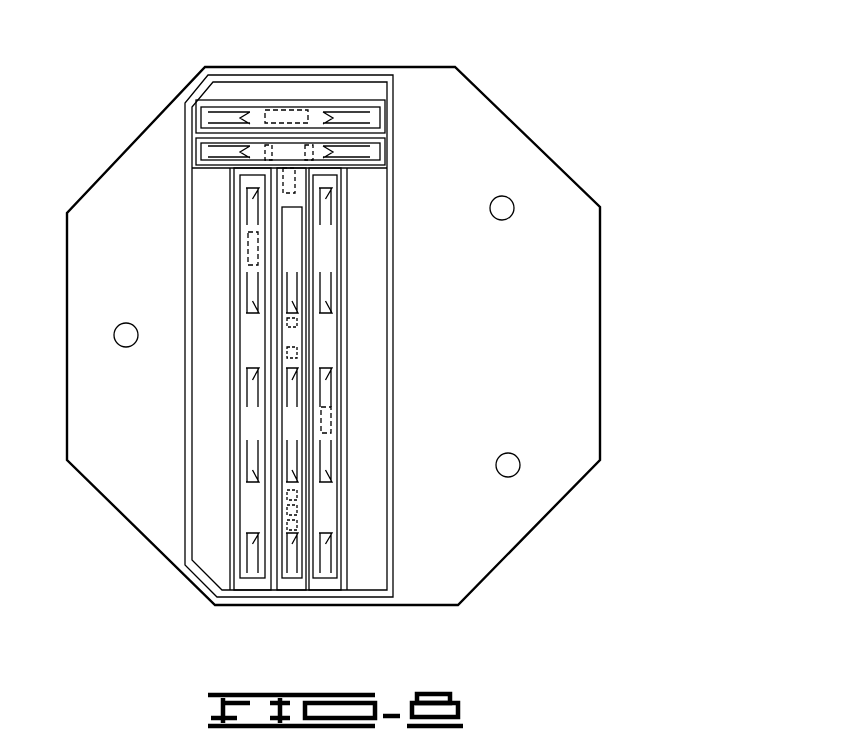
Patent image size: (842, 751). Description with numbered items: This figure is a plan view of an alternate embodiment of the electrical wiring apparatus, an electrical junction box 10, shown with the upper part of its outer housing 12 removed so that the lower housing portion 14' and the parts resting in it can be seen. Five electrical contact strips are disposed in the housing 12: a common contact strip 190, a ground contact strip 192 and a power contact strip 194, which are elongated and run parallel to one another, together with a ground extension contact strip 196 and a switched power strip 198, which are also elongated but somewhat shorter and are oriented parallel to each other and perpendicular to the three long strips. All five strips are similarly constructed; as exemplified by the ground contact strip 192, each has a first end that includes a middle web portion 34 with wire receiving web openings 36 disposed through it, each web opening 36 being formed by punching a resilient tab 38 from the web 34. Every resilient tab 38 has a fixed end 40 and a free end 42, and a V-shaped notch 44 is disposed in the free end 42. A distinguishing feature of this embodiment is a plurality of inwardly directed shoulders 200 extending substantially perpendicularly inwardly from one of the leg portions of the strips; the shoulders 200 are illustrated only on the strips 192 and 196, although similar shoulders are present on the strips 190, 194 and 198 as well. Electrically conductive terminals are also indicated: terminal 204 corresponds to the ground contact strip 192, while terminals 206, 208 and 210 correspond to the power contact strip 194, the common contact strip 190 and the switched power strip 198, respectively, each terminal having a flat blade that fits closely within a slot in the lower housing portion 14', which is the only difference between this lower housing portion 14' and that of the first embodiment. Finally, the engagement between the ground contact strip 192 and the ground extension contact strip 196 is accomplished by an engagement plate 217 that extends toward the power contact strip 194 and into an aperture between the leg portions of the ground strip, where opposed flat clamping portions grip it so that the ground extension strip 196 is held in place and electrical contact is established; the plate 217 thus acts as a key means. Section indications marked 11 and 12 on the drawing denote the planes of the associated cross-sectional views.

The electrical junction box 10 is at (290, 470).
The section line 11- 11 is at (177, 165).
The outer housing 12 is at (304, 145).
The lower housing portion 14' is at (333, 336).
The middle web portion 34 is at (330, 246).
The wire receiving web openings 36 is at (327, 383).
The resilient tab 38 is at (333, 285).
The fixed end 40 is at (328, 276).
The free end 42 is at (333, 301).
The V-shaped notch 44 is at (328, 320).
The common contact strip 190 is at (252, 583).
The ground contact strip 192 is at (290, 583).
The power contact strip 194 is at (401, 400).
The ground extension contact strip 196 is at (375, 153).
The switched power strip 198 is at (372, 117).
The inwardly directed shoulders 200 is at (311, 108).
The electrically conductive terminal 204 is at (290, 510).
The terminal 206 is at (333, 415).
The terminal 208 is at (250, 262).
The terminal 210 is at (268, 100).
The engagement plate 217 is at (283, 183).